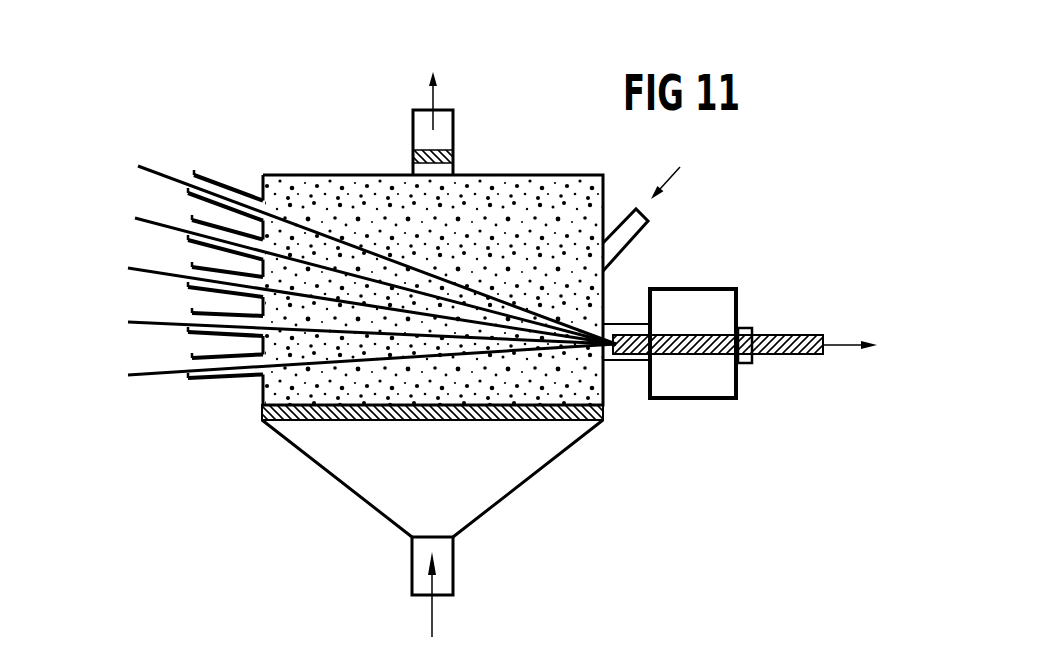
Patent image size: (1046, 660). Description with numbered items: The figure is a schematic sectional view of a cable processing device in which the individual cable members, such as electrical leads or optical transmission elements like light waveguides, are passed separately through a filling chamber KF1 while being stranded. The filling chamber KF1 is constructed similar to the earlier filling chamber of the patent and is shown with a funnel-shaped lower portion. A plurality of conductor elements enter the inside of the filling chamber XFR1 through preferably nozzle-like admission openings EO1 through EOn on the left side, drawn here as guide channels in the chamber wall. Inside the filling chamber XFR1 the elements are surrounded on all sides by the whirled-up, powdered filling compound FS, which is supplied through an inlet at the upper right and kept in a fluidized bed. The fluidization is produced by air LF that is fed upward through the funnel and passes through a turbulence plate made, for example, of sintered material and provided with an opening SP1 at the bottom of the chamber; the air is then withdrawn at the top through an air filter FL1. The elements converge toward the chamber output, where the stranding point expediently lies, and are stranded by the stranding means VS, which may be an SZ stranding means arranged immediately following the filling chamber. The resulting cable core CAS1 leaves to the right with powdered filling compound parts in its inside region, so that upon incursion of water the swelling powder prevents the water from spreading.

The admission opening EO1 is at (233, 189).
The admission opening EOn is at (222, 380).
The filling chamber interior XFR1 is at (352, 200).
The air filter FL1 is at (437, 147).
The filling compound FS is at (670, 178).
The cable core CAS1 is at (795, 333).
The stranding means VS is at (693, 390).
The turbulence plate opening SP1 is at (547, 422).
The filling chamber KF1 is at (312, 478).
The air LF is at (433, 615).